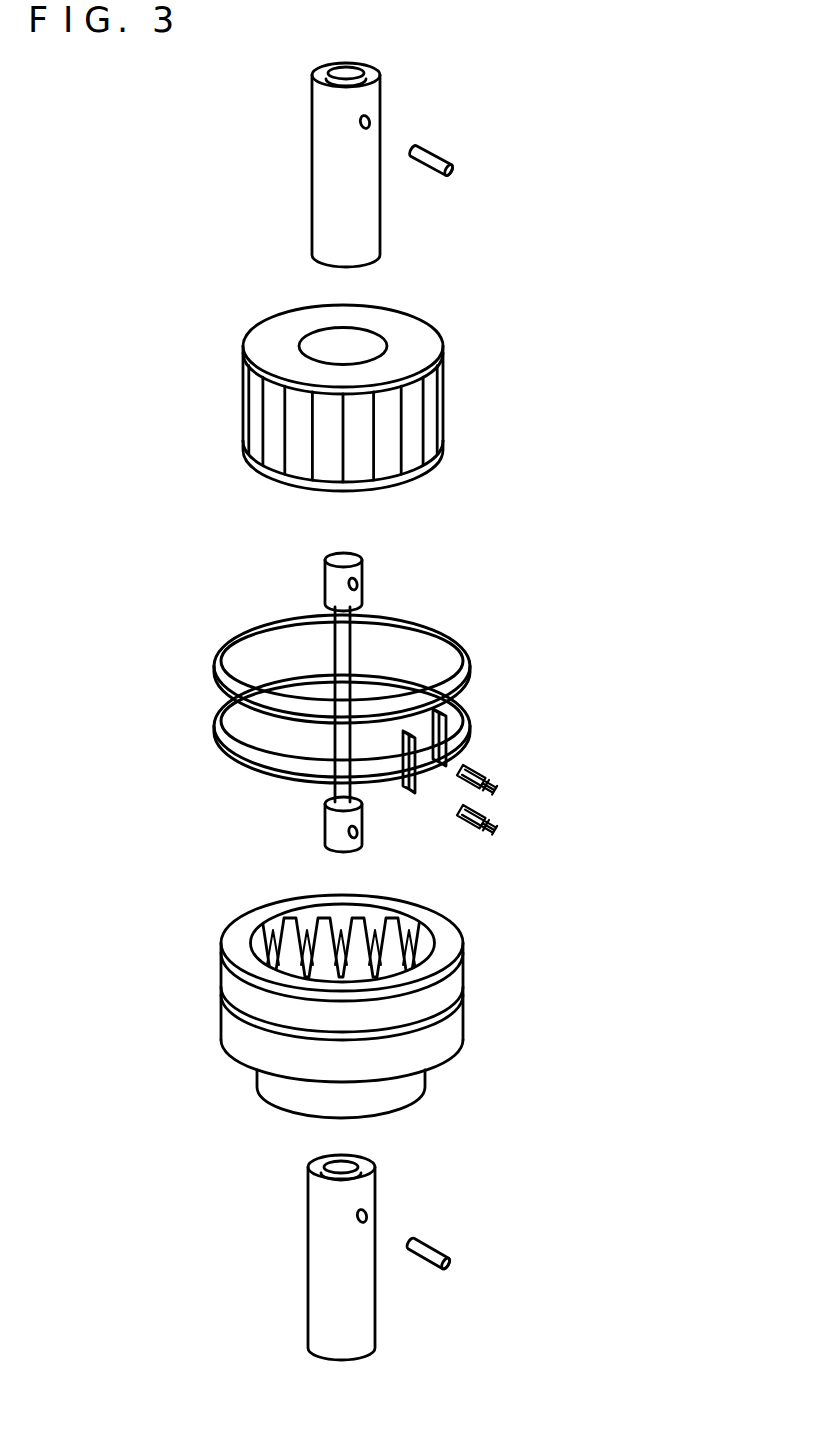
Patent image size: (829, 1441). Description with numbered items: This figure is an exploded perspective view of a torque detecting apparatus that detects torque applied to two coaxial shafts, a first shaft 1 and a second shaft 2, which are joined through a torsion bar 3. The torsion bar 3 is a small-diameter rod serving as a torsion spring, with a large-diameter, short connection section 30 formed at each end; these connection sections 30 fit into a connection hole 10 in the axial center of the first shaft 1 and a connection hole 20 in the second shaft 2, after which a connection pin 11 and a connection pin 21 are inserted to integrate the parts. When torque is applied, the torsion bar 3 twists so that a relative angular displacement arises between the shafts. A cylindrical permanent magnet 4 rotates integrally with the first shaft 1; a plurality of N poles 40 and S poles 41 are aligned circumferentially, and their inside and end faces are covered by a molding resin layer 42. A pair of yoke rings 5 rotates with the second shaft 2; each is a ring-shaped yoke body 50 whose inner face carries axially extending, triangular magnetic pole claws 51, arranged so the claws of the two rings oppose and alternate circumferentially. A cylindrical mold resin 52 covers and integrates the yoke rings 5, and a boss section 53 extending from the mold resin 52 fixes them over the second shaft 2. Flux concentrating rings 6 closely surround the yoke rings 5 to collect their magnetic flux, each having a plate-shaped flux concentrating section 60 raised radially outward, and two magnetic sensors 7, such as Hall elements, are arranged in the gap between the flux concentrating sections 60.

The first shaft 1 is at (320, 178).
The connection hole 10 is at (348, 74).
The connection pin 11 is at (432, 153).
The second shaft 2 is at (315, 1258).
The connection hole 20 is at (346, 1167).
The connection pin 21 is at (436, 1252).
The torsion bar 3 is at (337, 650).
The connection section 30 is at (327, 590).
The cylindrical permanent magnet 4 is at (289, 403).
The N pole 40 is at (396, 398).
The S pole 41 is at (356, 476).
The molding resin layer 42 is at (313, 392).
The yoke ring 5 is at (331, 996).
The yoke body 50 is at (220, 990).
The magnetic pole claw 51 is at (290, 953).
The mold resin 52 is at (458, 1022).
The boss section 53 is at (425, 1080).
The flux concentrating ring 6 is at (214, 672).
The flux concentrating section 60 is at (452, 723).
The magnetic sensor 7 is at (462, 812).